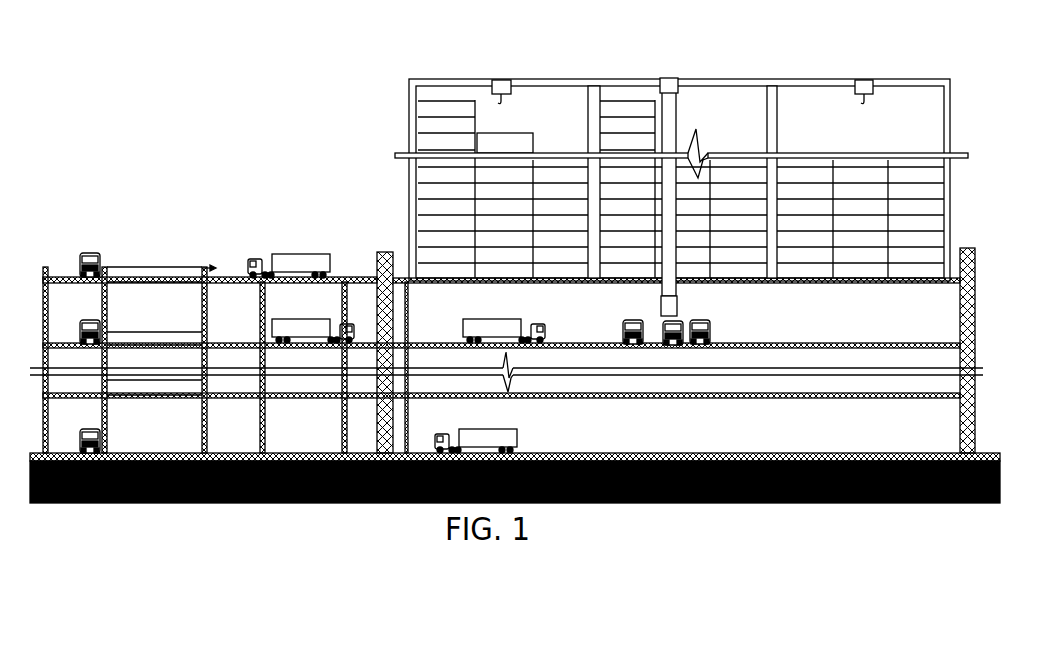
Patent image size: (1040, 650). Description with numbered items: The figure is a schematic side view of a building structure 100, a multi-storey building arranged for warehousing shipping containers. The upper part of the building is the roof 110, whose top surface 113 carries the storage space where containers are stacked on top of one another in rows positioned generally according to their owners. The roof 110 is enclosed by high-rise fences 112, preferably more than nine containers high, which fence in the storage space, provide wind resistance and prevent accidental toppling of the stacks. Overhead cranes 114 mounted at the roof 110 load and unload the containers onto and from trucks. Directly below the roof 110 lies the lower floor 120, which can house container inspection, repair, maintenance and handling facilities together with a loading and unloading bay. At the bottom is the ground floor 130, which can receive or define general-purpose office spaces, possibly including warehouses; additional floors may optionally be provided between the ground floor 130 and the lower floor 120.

The building structure 100 is at (214, 146).
The roof 110 is at (830, 126).
The high-rise fences 112 is at (950, 137).
The top surface 113 is at (923, 280).
The overhead cranes 114 is at (504, 79).
The lower floor 120 is at (816, 323).
The ground floor 130 is at (822, 436).